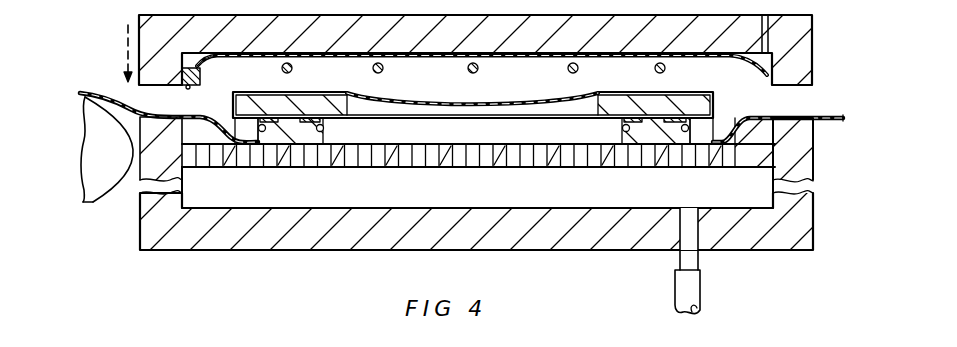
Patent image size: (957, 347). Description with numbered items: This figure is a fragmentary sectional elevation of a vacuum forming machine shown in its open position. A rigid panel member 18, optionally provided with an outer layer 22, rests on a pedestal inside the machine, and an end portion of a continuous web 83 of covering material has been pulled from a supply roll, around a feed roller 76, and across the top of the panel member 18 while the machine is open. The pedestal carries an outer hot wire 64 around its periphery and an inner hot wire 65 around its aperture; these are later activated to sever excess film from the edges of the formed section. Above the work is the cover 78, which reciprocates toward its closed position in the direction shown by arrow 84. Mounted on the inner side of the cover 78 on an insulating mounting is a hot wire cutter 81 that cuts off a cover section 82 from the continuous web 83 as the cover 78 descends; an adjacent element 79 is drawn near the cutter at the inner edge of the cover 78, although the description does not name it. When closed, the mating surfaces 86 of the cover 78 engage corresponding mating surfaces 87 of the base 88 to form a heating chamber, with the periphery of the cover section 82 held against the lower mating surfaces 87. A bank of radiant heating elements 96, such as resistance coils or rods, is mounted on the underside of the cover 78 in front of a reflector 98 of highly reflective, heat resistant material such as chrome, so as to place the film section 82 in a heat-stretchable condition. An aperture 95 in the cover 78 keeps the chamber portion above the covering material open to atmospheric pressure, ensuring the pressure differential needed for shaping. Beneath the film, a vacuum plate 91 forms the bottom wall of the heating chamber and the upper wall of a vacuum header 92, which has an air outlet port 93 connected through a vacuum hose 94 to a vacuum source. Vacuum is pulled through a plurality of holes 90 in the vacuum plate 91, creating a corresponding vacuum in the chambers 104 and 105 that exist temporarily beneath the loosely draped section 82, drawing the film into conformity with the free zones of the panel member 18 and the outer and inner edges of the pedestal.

The panel member 18 is at (697, 107).
The outer layer 22 is at (658, 107).
The outer hot wire 64 is at (267, 145).
The inner hot wire 65 is at (327, 129).
The feed roller 76 is at (99, 194).
The cover 78 is at (813, 18).
The membrane edge 79 is at (200, 70).
The hot wire cutter 81 is at (190, 85).
The cover section 82 is at (380, 95).
The continuous web 83 is at (90, 91).
The arrow 84 is at (127, 43).
The mating surfaces 86 is at (800, 88).
The mating surfaces 87 is at (815, 138).
The base 88 is at (813, 170).
The holes 90 is at (650, 166).
The vacuum plate 91 is at (563, 170).
The vacuum header 92 is at (477, 187).
The air outlet port 93 is at (700, 260).
The vacuum hose 94 is at (700, 298).
The aperture 95 is at (768, 38).
The radiant heating elements 96 is at (477, 69).
The reflector 98 is at (538, 56).
The chamber 104 is at (198, 142).
The chamber 105 is at (472, 132).